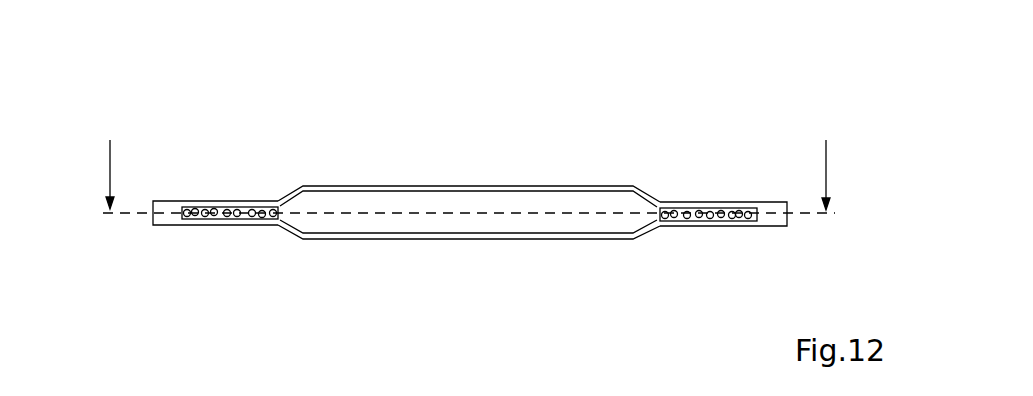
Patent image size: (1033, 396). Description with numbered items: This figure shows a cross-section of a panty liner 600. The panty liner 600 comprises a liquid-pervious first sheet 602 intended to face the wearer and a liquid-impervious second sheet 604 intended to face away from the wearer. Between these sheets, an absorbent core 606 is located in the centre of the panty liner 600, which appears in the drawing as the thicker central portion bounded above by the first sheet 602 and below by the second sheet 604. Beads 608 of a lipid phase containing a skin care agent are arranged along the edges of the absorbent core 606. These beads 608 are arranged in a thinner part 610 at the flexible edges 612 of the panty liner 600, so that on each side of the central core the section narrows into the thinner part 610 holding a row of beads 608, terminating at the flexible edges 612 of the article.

The panty liner 600 is at (560, 186).
The liquid-pervious first sheet 602 is at (446, 189).
The liquid-impervious second sheet 604 is at (474, 239).
The absorbent core 606 is at (400, 203).
The beads 608 is at (263, 219).
The thinner part 610 is at (243, 209).
The flexible edges 612 is at (153, 225).